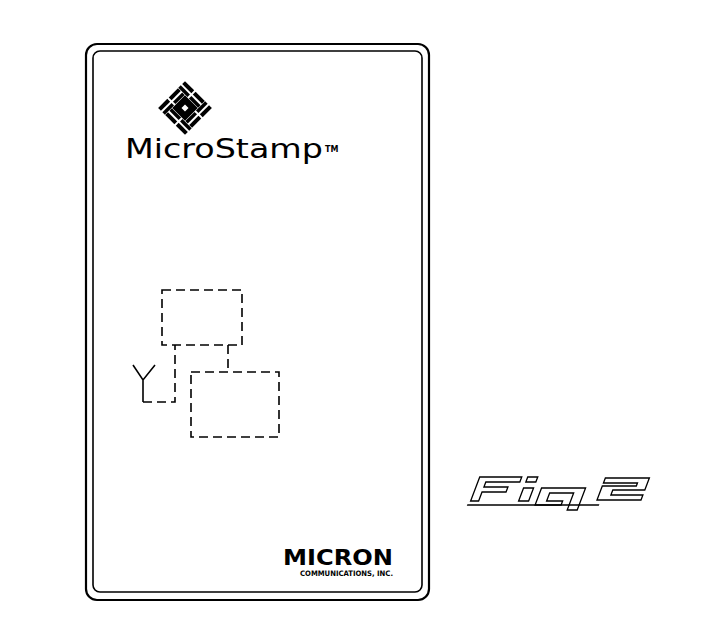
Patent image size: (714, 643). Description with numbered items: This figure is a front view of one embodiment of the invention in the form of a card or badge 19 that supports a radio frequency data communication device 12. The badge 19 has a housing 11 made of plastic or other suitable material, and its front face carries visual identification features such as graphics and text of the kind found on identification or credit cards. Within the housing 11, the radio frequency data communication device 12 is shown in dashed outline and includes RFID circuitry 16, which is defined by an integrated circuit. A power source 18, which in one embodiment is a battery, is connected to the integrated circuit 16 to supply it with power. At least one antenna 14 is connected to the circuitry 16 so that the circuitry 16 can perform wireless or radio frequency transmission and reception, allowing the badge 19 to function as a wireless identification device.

The housing 11 is at (125, 527).
The radio frequency data communication device 12 is at (249, 365).
The antenna 14 is at (136, 362).
The RFID circuitry 16 is at (202, 287).
The power source 18 is at (233, 440).
The card or badge 19 is at (385, 202).